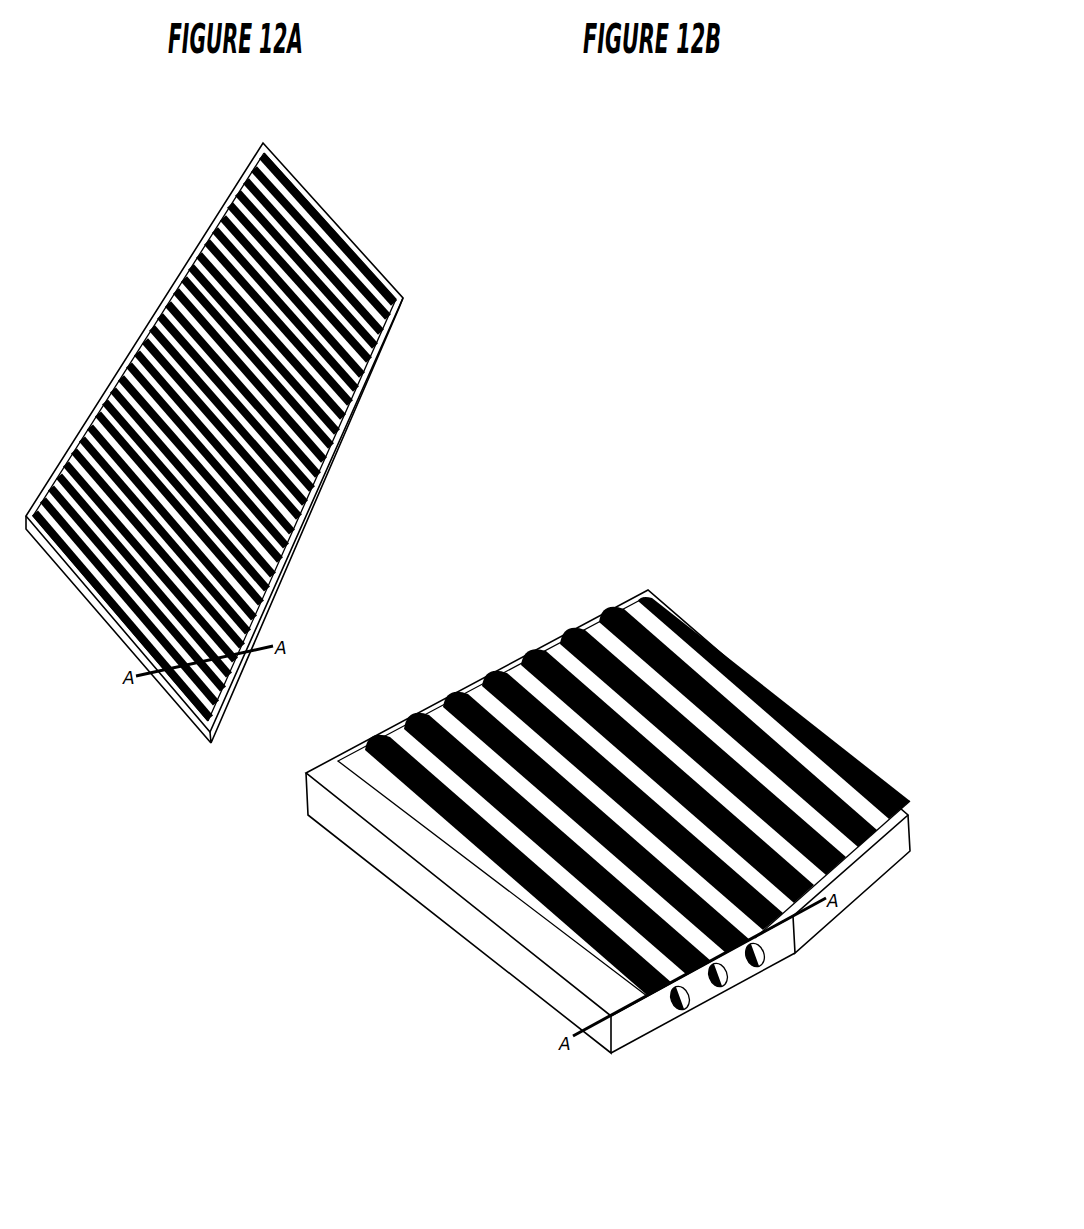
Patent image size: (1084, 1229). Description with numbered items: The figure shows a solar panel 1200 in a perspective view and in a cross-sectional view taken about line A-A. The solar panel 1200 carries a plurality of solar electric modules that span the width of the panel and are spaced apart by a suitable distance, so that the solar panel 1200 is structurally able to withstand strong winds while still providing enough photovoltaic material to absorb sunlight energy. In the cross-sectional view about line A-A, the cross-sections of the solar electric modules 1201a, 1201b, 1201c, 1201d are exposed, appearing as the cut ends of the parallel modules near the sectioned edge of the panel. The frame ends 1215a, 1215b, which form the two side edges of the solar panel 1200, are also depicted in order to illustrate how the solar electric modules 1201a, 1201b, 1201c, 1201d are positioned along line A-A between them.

In FIG. 12A, the solar panel 1200 is at (114, 220).
In FIG. 12A, the frame end 1215a is at (43, 547).
In FIG. 12B, the frame end 1215a is at (363, 840).
In FIG. 12A, the frame end 1215b is at (328, 452).
In FIG. 12B, the frame end 1215b is at (848, 868).
In FIG. 12A, the solar electric module 1201a is at (113, 597).
In FIG. 12B, the solar electric module 1201a is at (513, 887).
In FIG. 12A, the solar electric module 1201b is at (183, 660).
In FIG. 12B, the solar electric module 1201b is at (637, 993).
In FIG. 12A, the solar electric module 1201c is at (225, 660).
In FIG. 12B, the solar electric module 1201c is at (750, 960).
In FIG. 12A, the solar electric module 1201d is at (247, 603).
In FIG. 12B, the solar electric module 1201d is at (788, 913).